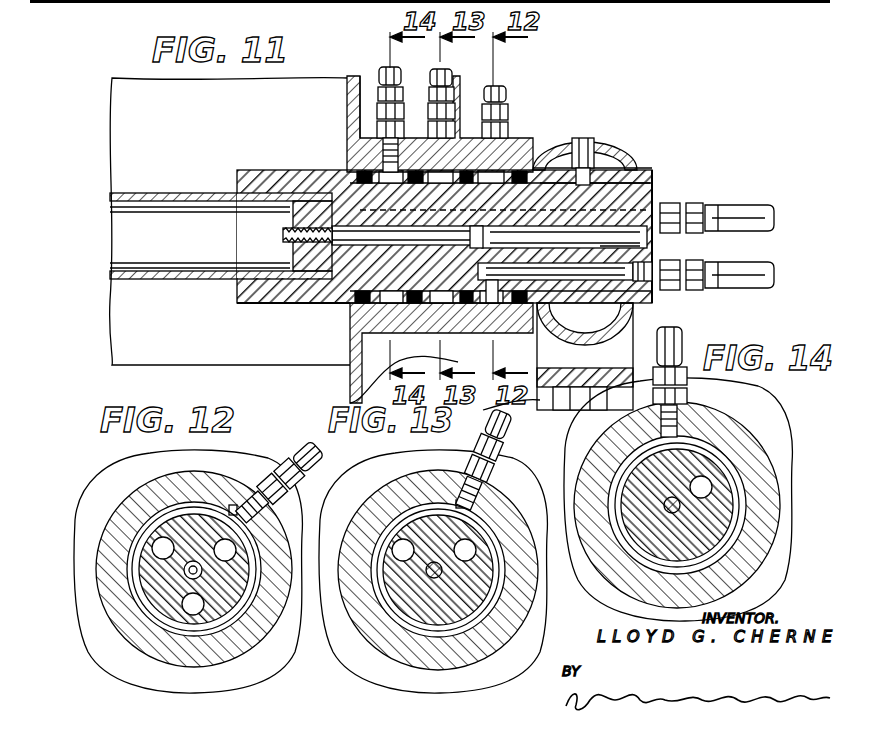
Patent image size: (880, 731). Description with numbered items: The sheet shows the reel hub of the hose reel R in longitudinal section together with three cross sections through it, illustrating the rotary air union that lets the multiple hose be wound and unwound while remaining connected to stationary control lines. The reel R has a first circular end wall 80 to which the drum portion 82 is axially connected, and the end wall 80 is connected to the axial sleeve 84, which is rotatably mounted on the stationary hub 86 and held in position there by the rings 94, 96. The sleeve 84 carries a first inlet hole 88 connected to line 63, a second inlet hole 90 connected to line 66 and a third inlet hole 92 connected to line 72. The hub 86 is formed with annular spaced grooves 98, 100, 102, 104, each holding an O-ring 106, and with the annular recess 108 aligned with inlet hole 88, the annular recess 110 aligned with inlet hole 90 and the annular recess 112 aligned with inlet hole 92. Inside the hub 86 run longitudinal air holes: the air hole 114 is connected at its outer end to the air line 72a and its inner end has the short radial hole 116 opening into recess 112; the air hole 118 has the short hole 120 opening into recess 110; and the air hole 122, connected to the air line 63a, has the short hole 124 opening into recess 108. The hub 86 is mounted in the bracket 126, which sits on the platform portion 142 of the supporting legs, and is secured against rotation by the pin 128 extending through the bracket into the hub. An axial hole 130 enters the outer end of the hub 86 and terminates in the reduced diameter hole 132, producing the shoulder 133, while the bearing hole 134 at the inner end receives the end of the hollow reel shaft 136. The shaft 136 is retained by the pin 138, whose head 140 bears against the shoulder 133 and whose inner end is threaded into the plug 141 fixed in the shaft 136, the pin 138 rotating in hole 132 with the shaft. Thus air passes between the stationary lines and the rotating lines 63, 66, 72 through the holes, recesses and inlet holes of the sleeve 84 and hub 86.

In FIG. 11, the reel R is at (122, 99).
In FIG. 11, the drum portion 82 is at (110, 128).
In FIG. 11, the hollow reel shaft 136 is at (178, 192).
In FIG. 11, the ring 94 is at (300, 218).
In FIG. 11, the pin 138 is at (285, 237).
In FIG. 13, the pin 138 is at (438, 578).
In FIG. 14, the pin 138 is at (680, 510).
In FIG. 11, the plug 141 is at (292, 255).
In FIG. 11, the bearing hole 134 is at (272, 303).
In FIG. 11, the first circular end wall 80 is at (350, 92).
In FIG. 12, the first circular end wall 80 is at (85, 515).
In FIG. 13, the first circular end wall 80 is at (378, 668).
In FIG. 14, the first circular end wall 80 is at (760, 572).
In FIG. 11, the axial sleeve 84 is at (510, 172).
In FIG. 12, the axial sleeve 84 is at (100, 545).
In FIG. 13, the axial sleeve 84 is at (425, 665).
In FIG. 14, the axial sleeve 84 is at (760, 548).
In FIG. 11, the stationary hub 86 is at (660, 176).
In FIG. 12, the stationary hub 86 is at (140, 580).
In FIG. 13, the stationary hub 86 is at (415, 615).
In FIG. 11, the third inlet hole 92 is at (360, 167).
In FIG. 14, the third inlet hole 92 is at (673, 432).
In FIG. 11, the O-ring 106 is at (441, 189).
In FIG. 11, the annular recess 110 is at (436, 189).
In FIG. 13, the annular recess 110 is at (483, 535).
In FIG. 11, the annular recess 108 is at (485, 172).
In FIG. 12, the annular recess 108 is at (160, 600).
In FIG. 11, the annular groove 104 is at (586, 195).
In FIG. 11, the annular groove 98 is at (362, 291).
In FIG. 11, the reduced diameter hole 132 is at (400, 284).
In FIG. 11, the annular groove 100 is at (416, 291).
In FIG. 11, the annular groove 102 is at (460, 291).
In FIG. 11, the short hole 124 is at (493, 305).
In FIG. 12, the short hole 124 is at (194, 622).
In FIG. 11, the head 140 is at (471, 232).
In FIG. 12, the head 140 is at (215, 615).
In FIG. 11, the shoulder 133 is at (564, 237).
In FIG. 11, the internal longitudinally extending air hole 122 is at (578, 276).
In FIG. 12, the internal longitudinally extending air hole 122 is at (185, 615).
In FIG. 11, the axial hole 130 is at (640, 246).
In FIG. 12, the axial hole 130 is at (205, 580).
In FIG. 11, the line 72 is at (382, 70).
In FIG. 14, the line 72 is at (684, 344).
In FIG. 11, the annular recess 112 is at (399, 165).
In FIG. 14, the annular recess 112 is at (712, 470).
In FIG. 11, the line 66 is at (442, 72).
In FIG. 13, the line 66 is at (510, 425).
In FIG. 11, the line 63 is at (495, 92).
In FIG. 12, the line 63 is at (301, 447).
In FIG. 11, the bracket 126 is at (625, 150).
In FIG. 11, the pin 128 is at (590, 140).
In FIG. 11, the platform portion 142 is at (585, 378).
In FIG. 11, the air line 72a is at (760, 210).
In FIG. 11, the air line 63a is at (745, 288).
In FIG. 11, the ring 96 is at (530, 168).
In FIG. 12, the internal longitudinally extending air hole 118 is at (156, 548).
In FIG. 13, the internal longitudinally extending air hole 118 is at (377, 598).
In FIG. 12, the internal longitudinally extending air hole 114 is at (235, 555).
In FIG. 13, the internal longitudinally extending air hole 114 is at (480, 556).
In FIG. 14, the internal longitudinally extending air hole 114 is at (700, 500).
In FIG. 12, the first inlet hole 88 is at (243, 515).
In FIG. 13, the short hole 120 is at (394, 545).
In FIG. 13, the second inlet hole 90 is at (468, 508).
In FIG. 14, the short hole 116 is at (714, 483).